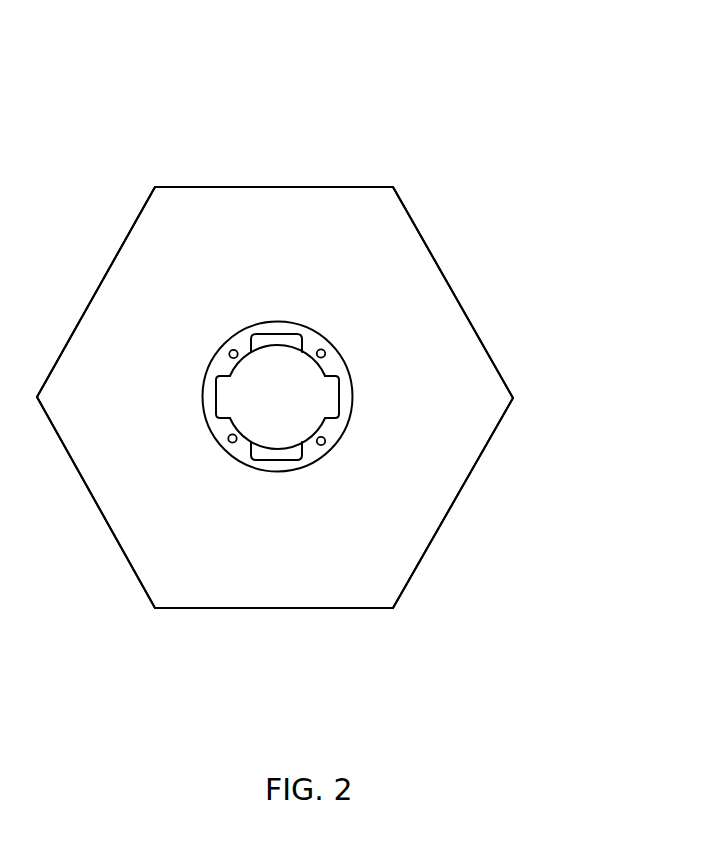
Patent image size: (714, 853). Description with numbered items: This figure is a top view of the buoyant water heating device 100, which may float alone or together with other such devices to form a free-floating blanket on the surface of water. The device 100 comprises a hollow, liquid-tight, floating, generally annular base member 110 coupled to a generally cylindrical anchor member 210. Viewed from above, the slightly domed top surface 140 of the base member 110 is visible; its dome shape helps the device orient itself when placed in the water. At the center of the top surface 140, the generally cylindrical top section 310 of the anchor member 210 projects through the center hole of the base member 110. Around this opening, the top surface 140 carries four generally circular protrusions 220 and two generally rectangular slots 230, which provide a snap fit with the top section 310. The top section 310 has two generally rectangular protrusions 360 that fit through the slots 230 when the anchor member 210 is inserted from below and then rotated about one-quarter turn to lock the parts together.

The buoyant water heating device 100 is at (272, 133).
The base member 110 is at (466, 531).
The top surface 140 is at (172, 205).
The anchor member 210 is at (297, 378).
The generally circular protrusions 220 is at (230, 441).
The generally rectangular slots 230 is at (288, 453).
The top section 310 is at (245, 357).
The generally rectangular protrusions 360 is at (223, 398).